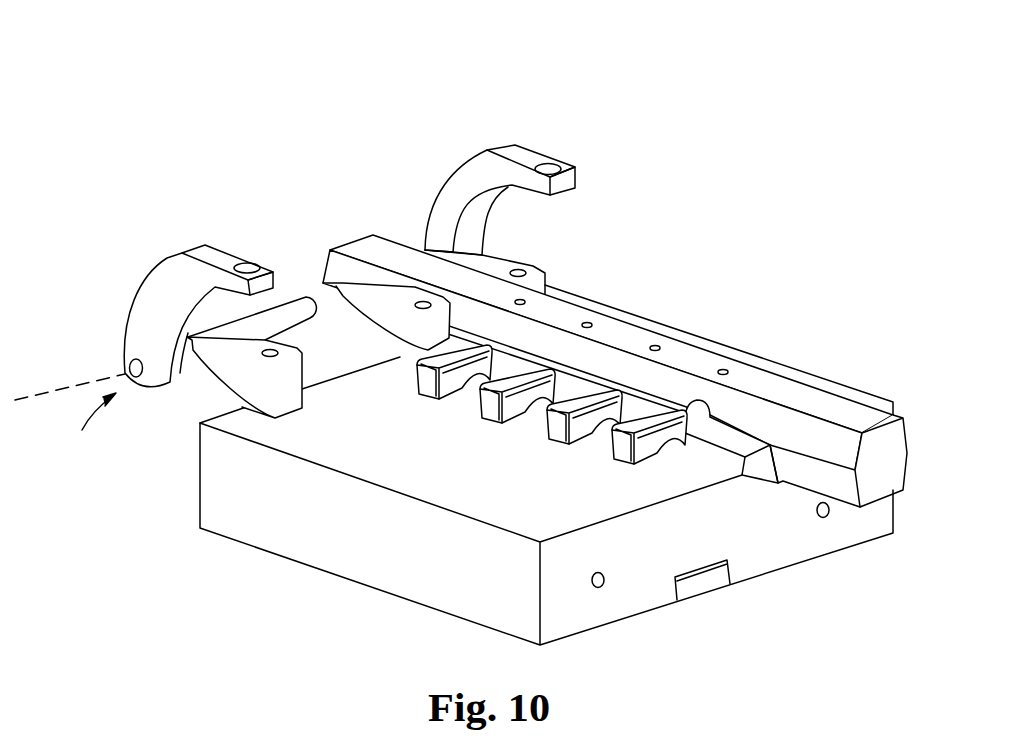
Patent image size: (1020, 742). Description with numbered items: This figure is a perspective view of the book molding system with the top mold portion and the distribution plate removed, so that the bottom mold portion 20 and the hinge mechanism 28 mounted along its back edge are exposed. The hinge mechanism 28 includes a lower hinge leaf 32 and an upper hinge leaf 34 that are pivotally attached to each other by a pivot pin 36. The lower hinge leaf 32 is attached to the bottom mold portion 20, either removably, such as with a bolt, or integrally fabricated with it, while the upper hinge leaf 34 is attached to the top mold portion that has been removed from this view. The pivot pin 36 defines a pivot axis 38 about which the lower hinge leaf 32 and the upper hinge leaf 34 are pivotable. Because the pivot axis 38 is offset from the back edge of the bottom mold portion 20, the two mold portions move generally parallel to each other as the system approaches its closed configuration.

The bottom mold portion 20 is at (340, 553).
The hinge mechanism 28 is at (90, 427).
The lower hinge leaf 32 is at (202, 387).
The upper hinge leaf 34 is at (503, 152).
The pivot pin 36 is at (296, 310).
The pivot axis 38 is at (97, 380).